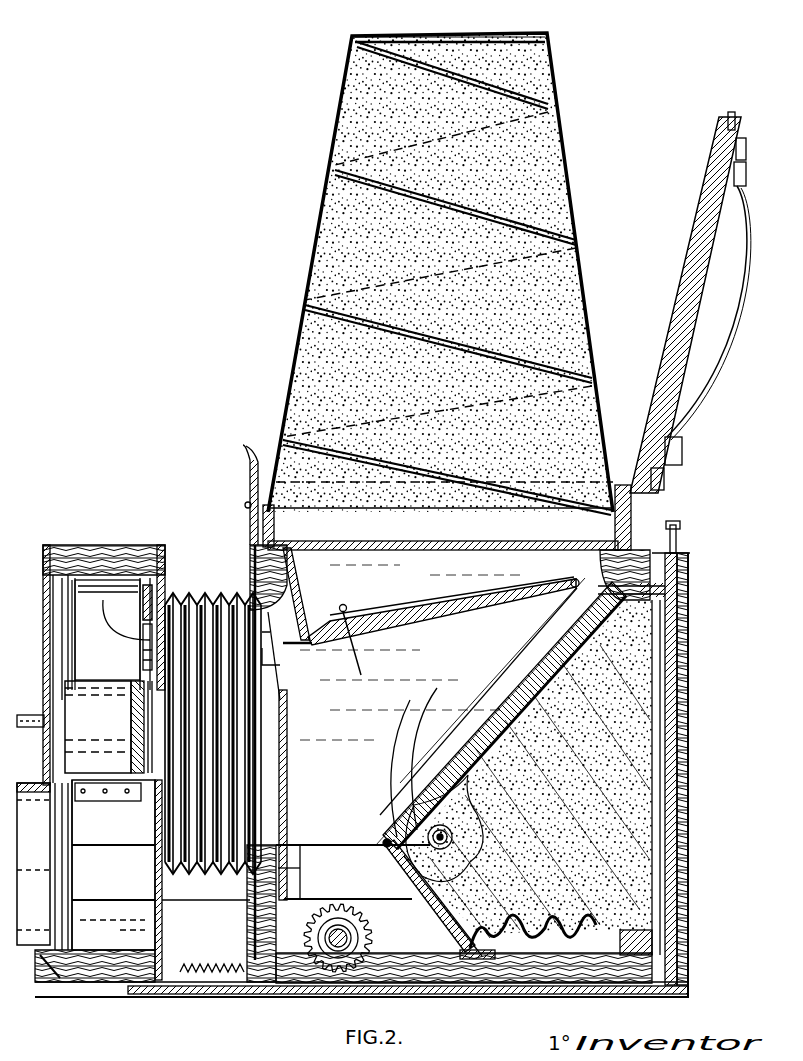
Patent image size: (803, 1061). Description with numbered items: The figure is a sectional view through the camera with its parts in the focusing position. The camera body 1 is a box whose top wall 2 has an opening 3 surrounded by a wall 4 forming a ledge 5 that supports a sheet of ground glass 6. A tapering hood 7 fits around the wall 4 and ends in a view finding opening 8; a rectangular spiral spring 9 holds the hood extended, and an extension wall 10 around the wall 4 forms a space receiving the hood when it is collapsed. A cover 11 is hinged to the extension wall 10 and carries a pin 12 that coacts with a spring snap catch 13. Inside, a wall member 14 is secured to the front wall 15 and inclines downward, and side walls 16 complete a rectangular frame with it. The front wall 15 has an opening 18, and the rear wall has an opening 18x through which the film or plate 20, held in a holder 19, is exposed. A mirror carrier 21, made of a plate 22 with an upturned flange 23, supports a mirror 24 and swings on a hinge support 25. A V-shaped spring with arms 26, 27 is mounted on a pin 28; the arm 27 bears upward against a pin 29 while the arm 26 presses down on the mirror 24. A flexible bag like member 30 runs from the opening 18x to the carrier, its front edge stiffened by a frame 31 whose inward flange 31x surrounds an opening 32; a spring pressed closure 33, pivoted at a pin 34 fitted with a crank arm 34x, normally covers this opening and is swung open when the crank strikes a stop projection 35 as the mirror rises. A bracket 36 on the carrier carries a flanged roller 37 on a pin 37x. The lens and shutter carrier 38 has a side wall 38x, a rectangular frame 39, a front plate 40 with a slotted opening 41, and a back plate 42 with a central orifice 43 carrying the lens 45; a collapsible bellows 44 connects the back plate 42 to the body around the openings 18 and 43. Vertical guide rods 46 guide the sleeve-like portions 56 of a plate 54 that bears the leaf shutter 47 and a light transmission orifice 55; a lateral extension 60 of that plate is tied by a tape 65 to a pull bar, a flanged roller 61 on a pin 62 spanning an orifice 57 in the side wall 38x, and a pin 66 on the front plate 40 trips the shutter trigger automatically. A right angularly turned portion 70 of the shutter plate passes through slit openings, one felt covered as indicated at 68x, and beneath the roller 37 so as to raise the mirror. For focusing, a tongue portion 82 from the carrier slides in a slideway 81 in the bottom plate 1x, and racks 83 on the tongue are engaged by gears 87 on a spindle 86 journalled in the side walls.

The camera body 1 is at (652, 990).
The bottom plate 1x is at (560, 970).
The top wall 2 is at (645, 556).
The opening 3 is at (283, 560).
The wall 4 is at (632, 525).
The ledge 5 is at (272, 545).
The ground glass 6 is at (450, 549).
The hood 7 is at (562, 124).
The view finding opening 8 is at (500, 36).
The rectangular spiral spring 9 is at (530, 220).
The extension wall 10 is at (633, 488).
The cover 11 is at (690, 330).
The pin 12 is at (732, 114).
The spring snap catch 13 is at (243, 450).
The wall member 14 is at (355, 594).
The front wall 15 is at (270, 876).
The side walls 16 is at (452, 587).
The opening 18 is at (268, 782).
The rear wall opening 18x is at (660, 917).
The holder 19 is at (688, 716).
The film or plate 20 is at (690, 612).
The mirror carrier 21 is at (662, 636).
The plate 22 is at (533, 693).
The flange 23 is at (372, 808).
The mirror 24 is at (470, 760).
The hinge support 25 is at (690, 580).
The spring arm 26 is at (515, 700).
The spring arm 27 is at (468, 602).
The pin 28 is at (567, 573).
The pin 29 is at (410, 652).
The bag like member 30 is at (620, 873).
The frame 31 is at (416, 880).
The flange 31x is at (462, 960).
The opening 32 is at (468, 962).
The spring pressed closure 33 is at (440, 905).
The pivot pin 34 is at (388, 800).
The crank arm 34x is at (378, 843).
The stop projection 35 is at (272, 650).
The bracket 36 is at (405, 760).
The flanged roller 37 is at (444, 779).
The pin 37x is at (470, 830).
The lens and shutter carrier 38 is at (108, 575).
The side wall 38x is at (112, 911).
The rectangular frame 39 is at (160, 560).
The front plate 40 is at (45, 574).
The slotted opening 41 is at (58, 640).
The back plate 42 is at (163, 928).
The central orifice 43 is at (288, 746).
The collapsible bellows 44 is at (215, 593).
The lens 45 is at (108, 727).
The vertical guide rods 46 is at (66, 614).
The shutter 47 is at (42, 860).
The plate 54 is at (72, 958).
The light transmission orifice 55 is at (68, 960).
The sleeve-like portion 56 is at (62, 828).
The orifice 57 is at (115, 595).
The lateral extension 60 is at (110, 802).
The flanged roller 61 is at (160, 585).
The pin 62 is at (153, 590).
The tape 65 is at (92, 650).
The pin 66 is at (26, 714).
The felt covering 68x is at (350, 757).
The right angularly turned portion 70 is at (312, 855).
The slideway 81 is at (615, 985).
The tongue portion 82 is at (228, 995).
The racks 83 is at (206, 936).
The spindle 86 is at (335, 950).
The gears 87 is at (338, 908).